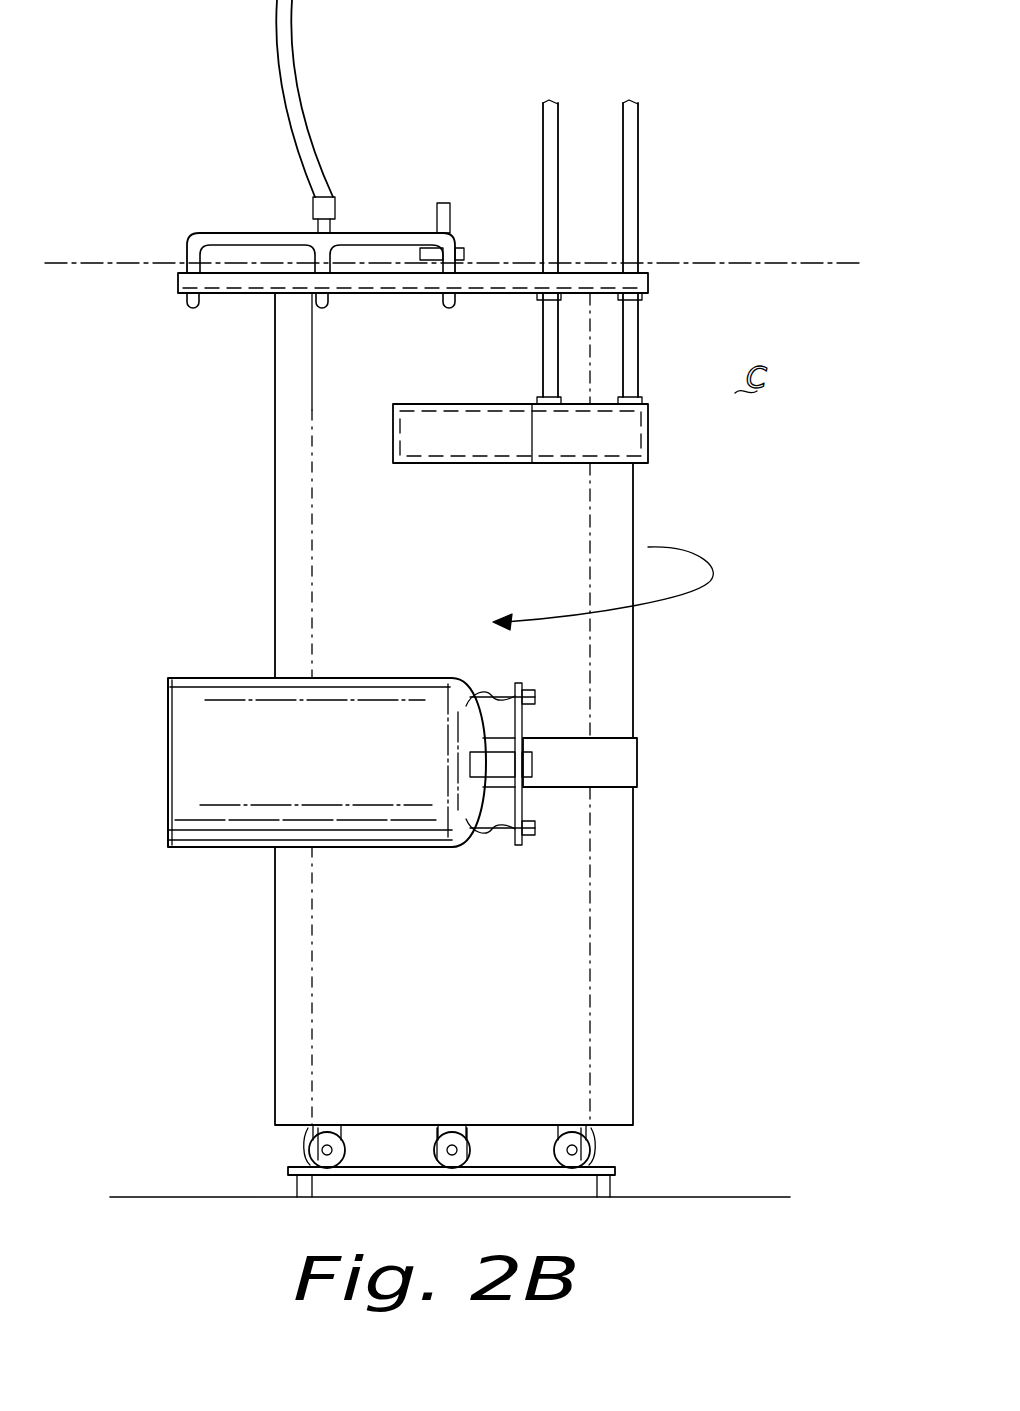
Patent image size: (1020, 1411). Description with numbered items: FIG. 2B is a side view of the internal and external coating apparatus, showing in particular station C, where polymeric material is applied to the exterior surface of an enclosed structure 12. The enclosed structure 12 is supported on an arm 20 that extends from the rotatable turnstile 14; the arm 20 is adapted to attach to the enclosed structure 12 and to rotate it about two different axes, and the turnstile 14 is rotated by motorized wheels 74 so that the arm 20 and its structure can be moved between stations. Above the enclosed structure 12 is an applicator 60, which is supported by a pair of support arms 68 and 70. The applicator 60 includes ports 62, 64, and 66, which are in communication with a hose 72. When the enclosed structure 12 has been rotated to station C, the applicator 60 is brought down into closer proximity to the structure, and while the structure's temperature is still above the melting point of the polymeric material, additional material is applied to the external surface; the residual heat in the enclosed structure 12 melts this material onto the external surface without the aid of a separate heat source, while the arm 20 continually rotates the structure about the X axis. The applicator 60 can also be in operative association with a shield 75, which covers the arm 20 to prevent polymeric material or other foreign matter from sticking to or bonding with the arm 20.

The enclosed structure 12 is at (342, 770).
The rotatable turnstile 14 is at (275, 452).
The arm 20 is at (630, 758).
The applicator 60 is at (209, 221).
The port 62 is at (191, 306).
The port 64 is at (328, 303).
The port 66 is at (447, 303).
The support arm 68 is at (543, 198).
The support arm 70 is at (636, 182).
The hose 72 is at (291, 72).
The motorized wheel 74 is at (437, 1150).
The shield 75 is at (637, 445).